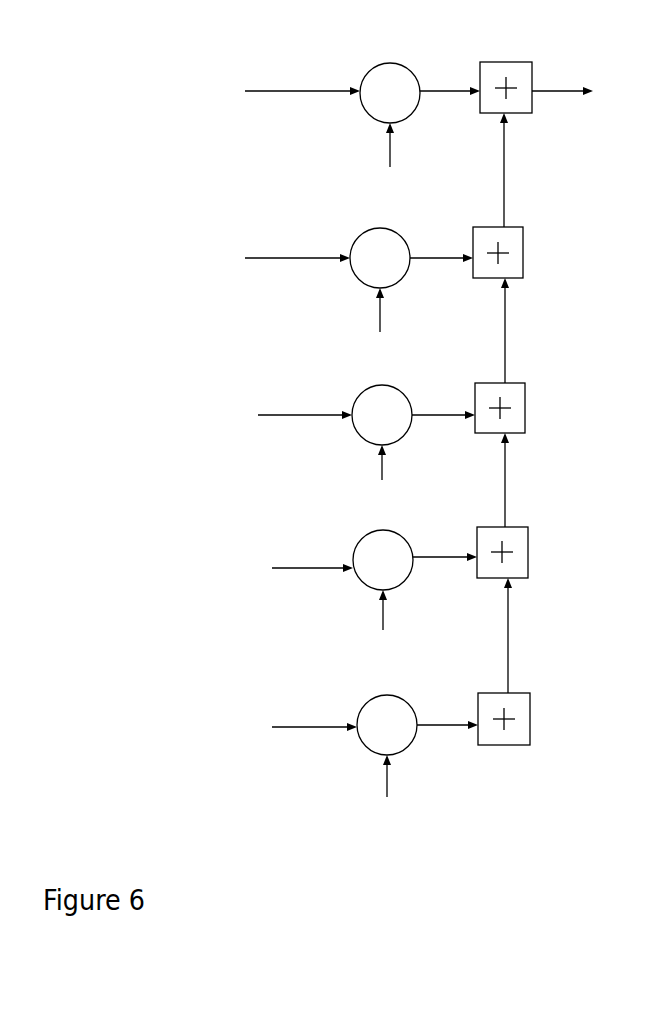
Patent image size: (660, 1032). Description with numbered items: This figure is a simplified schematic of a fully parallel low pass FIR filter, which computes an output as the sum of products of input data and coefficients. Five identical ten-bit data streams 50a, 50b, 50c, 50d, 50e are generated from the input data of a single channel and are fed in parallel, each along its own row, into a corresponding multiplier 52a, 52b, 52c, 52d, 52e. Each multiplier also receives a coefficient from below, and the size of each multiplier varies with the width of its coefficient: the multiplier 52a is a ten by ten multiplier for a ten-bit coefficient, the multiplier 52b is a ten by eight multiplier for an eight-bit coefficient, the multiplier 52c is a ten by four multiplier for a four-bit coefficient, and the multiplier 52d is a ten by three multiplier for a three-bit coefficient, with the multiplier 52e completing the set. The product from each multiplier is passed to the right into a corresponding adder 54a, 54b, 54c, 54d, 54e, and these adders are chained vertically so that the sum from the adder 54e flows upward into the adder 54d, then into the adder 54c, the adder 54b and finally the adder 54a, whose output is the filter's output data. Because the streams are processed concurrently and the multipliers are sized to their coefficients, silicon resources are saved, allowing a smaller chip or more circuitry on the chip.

The data stream 50a is at (246, 91).
The data stream 50b is at (237, 256).
The data stream 50c is at (236, 419).
The data stream 50d is at (236, 560).
The data stream 50e is at (238, 726).
The multiplier 52a is at (412, 70).
The multiplier 52b is at (407, 238).
The multiplier 52c is at (411, 401).
The multiplier 52d is at (410, 548).
The multiplier 52e is at (415, 712).
The adder 54a is at (526, 116).
The adder 54b is at (523, 254).
The adder 54c is at (525, 414).
The adder 54d is at (528, 554).
The adder 54e is at (530, 721).